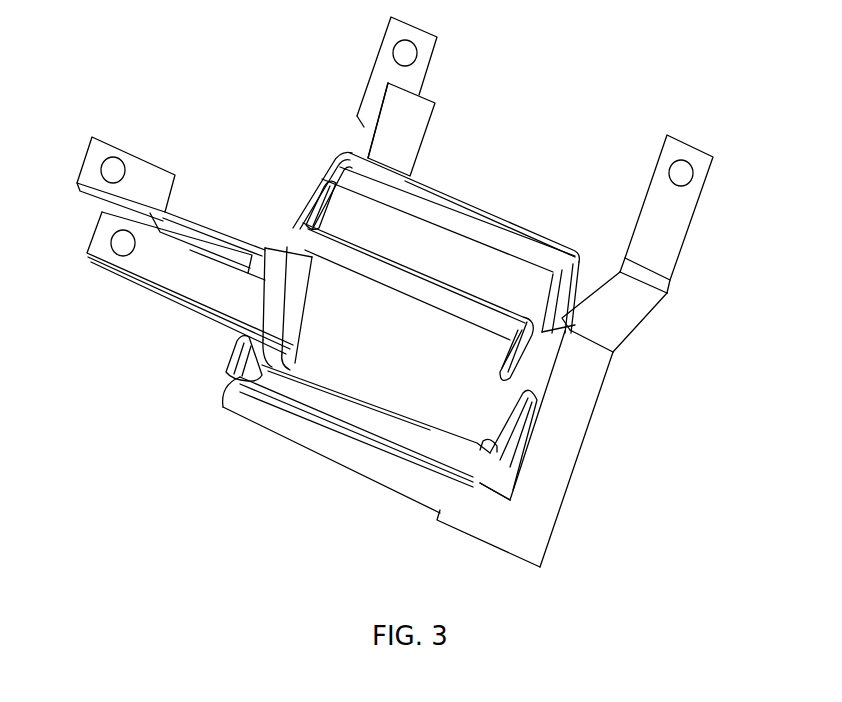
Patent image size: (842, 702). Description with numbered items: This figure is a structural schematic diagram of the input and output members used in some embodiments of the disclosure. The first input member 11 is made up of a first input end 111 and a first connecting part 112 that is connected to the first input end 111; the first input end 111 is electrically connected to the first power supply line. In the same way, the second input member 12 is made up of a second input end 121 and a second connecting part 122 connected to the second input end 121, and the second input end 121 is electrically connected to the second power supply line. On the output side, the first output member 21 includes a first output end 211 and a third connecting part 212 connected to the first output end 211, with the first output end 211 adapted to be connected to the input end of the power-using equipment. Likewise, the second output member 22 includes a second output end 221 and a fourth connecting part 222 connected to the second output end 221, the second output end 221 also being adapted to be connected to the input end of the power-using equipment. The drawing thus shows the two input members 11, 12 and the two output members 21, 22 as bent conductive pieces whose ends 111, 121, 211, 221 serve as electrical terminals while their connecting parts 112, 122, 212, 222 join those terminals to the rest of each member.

The first input member 11 is at (443, 181).
The first input end 111 is at (395, 127).
The first connecting part 112 is at (507, 232).
The second input member 12 is at (643, 340).
The second input end 121 is at (557, 427).
The second connecting part 122 is at (347, 450).
The first output member 21 is at (223, 327).
The first output end 211 is at (178, 275).
The third connecting part 212 is at (437, 447).
The second output member 22 is at (258, 215).
The second output end 221 is at (152, 180).
The fourth connecting part 222 is at (407, 283).